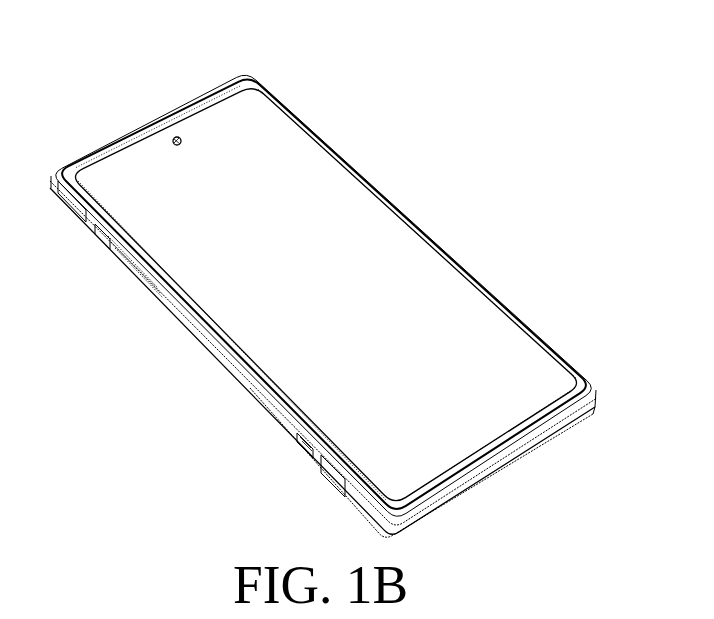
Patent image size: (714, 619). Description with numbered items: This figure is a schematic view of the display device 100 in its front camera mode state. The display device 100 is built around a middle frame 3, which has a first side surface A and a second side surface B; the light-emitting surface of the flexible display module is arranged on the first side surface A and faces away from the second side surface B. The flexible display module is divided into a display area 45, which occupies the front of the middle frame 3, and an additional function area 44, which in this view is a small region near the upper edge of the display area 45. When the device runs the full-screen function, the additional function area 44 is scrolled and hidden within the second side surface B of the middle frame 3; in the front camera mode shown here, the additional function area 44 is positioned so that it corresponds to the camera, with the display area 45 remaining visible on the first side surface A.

The display device 100 is at (84, 78).
The middle frame 3 is at (248, 74).
The additional function area 44 is at (176, 136).
The display area 45 is at (361, 198).
The first side surface A is at (278, 131).
The second side surface B is at (203, 351).